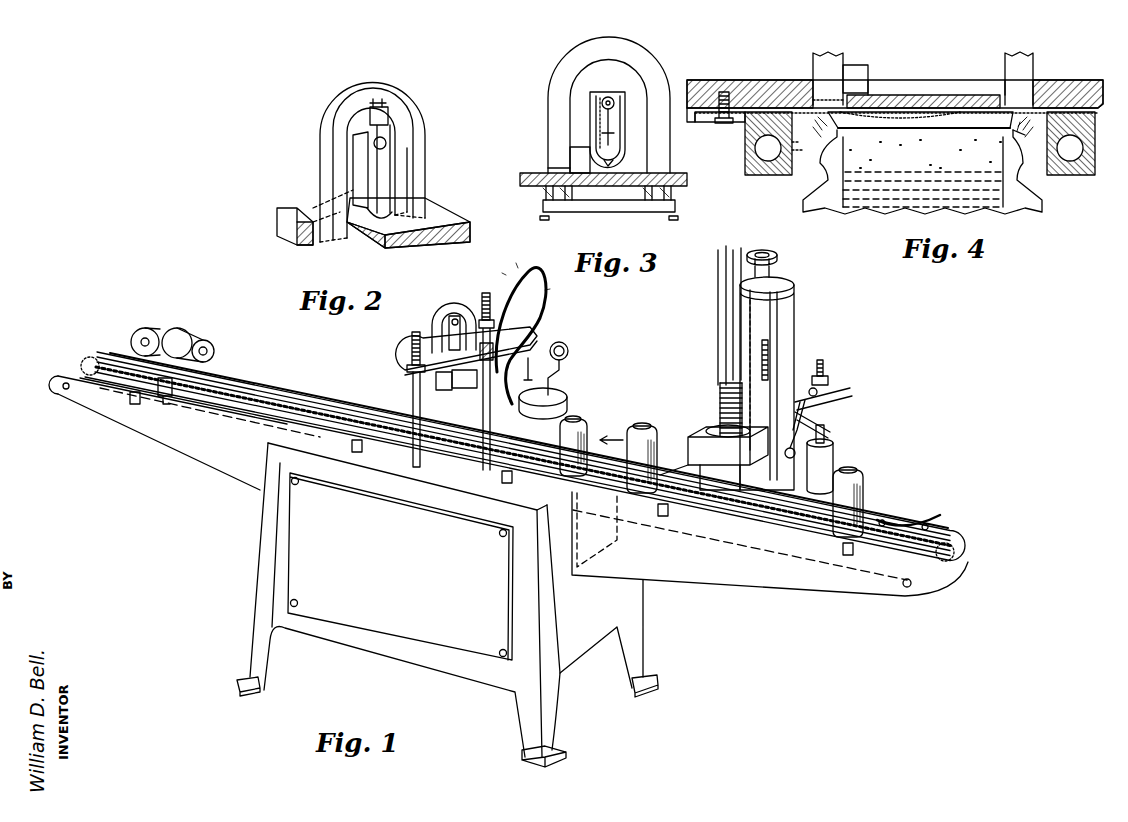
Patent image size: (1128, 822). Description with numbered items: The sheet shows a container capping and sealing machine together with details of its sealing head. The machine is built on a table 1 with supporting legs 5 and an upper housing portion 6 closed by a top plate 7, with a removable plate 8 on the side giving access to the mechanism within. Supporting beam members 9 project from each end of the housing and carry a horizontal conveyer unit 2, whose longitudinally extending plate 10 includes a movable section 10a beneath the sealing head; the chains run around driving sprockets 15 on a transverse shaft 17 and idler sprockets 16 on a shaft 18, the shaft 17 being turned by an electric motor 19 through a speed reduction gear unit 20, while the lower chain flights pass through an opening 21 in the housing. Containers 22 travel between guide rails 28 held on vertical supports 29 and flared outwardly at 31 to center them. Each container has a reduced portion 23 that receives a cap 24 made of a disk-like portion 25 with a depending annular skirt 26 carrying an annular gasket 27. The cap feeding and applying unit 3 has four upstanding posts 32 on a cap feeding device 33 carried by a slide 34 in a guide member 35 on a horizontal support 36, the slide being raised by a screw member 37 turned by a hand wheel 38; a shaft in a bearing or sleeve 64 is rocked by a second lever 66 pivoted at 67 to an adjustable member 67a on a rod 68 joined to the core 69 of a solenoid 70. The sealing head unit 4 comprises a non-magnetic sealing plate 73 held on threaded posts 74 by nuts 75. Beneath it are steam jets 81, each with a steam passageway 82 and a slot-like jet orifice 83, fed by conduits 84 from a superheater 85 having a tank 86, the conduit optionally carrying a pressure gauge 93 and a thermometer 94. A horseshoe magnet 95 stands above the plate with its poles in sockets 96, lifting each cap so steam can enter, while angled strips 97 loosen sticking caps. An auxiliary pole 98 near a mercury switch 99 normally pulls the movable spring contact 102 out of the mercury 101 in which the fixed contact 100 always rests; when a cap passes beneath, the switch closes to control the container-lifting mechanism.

In FIG. 1, the table 1 is at (258, 527).
In FIG. 1, the conveyer unit 2 is at (267, 400).
In FIG. 1, the cap feeding and applying unit 3 is at (792, 331).
In FIG. 1, the sealing head unit 4 is at (428, 336).
In FIG. 1, the supporting legs 5 is at (258, 654).
In FIG. 1, the upper housing portion 6 is at (278, 547).
In FIG. 1, the top plate 7 is at (369, 392).
In FIG. 1, the removable plate 8 is at (308, 565).
In FIG. 1, the supporting beam members 9 is at (217, 453).
In FIG. 1, the longitudinally extending plate 10 is at (133, 379).
In FIG. 1, the movable section 10a is at (453, 453).
In FIG. 1, the driving sprockets 15 is at (88, 359).
In FIG. 1, the idler sprockets 16 is at (942, 566).
In FIG. 1, the horizontal transverse shaft 17 is at (57, 386).
In FIG. 1, the horizontal transverse shaft 18 is at (908, 590).
In FIG. 1, the electric motor 19 is at (185, 331).
In FIG. 1, the speed reduction gear unit 20 is at (150, 329).
In FIG. 1, the opening 21 is at (622, 538).
In FIG. 4, the containers 22 is at (1033, 213).
In FIG. 1, the containers 22 is at (588, 433).
In FIG. 4, the reduced portion 23 is at (1027, 160).
In FIG. 3, the cap 24 is at (676, 206).
In FIG. 4, the disk-like portion 25 is at (915, 112).
In FIG. 4, the annular skirt 26 is at (817, 140).
In FIG. 4, the annular gasket 27 is at (957, 126).
In FIG. 1, the guide rails 28 is at (238, 367).
In FIG. 1, the vertical supports 29 is at (163, 397).
In FIG. 1, the flared portion 31 is at (930, 516).
In FIG. 1, the upstanding posts 32 is at (716, 321).
In FIG. 1, the cap feeding device 33 is at (706, 436).
In FIG. 1, the slide 34 is at (720, 388).
In FIG. 1, the guide member 35 is at (783, 338).
In FIG. 1, the horizontal support 36 is at (832, 465).
In FIG. 1, the screw member 37 is at (769, 352).
In FIG. 1, the hand wheel 38 is at (778, 255).
In FIG. 1, the bearing or sleeve 64 is at (818, 408).
In FIG. 1, the second lever 66 is at (818, 392).
In FIG. 1, the pivot 67 is at (810, 392).
In FIG. 1, the adjustable member 67a is at (826, 374).
In FIG. 1, the rod 68 is at (806, 423).
In FIG. 1, the core 69 is at (826, 436).
In FIG. 1, the solenoid 70 is at (836, 480).
In FIG. 2, the sealing plate 73 is at (443, 217).
In FIG. 3, the sealing plate 73 is at (526, 180).
In FIG. 4, the sealing plate 73 is at (768, 93).
In FIG. 1, the sealing plate 73 is at (496, 335).
In FIG. 1, the posts 74 is at (411, 448).
In FIG. 1, the nuts 75 is at (408, 365).
In FIG. 4, the steam jets 81 is at (746, 133).
In FIG. 1, the steam jets 81 is at (455, 382).
In FIG. 4, the steam passageway 82 is at (760, 148).
In FIG. 4, the jet orifice 83 is at (782, 167).
In FIG. 1, the conduits 84 is at (511, 402).
In FIG. 1, the superheater 85 is at (552, 393).
In FIG. 1, the tank 86 is at (574, 417).
In FIG. 1, the pressure gauge 93 is at (567, 349).
In FIG. 1, the thermometer 94 is at (530, 365).
In FIG. 2, the magnet 95 is at (331, 123).
In FIG. 3, the magnet 95 is at (583, 56).
In FIG. 4, the magnet 95 is at (829, 73).
In FIG. 1, the magnet 95 is at (445, 320).
In FIG. 2, the sockets 96 is at (422, 207).
In FIG. 3, the sockets 96 is at (551, 172).
In FIG. 4, the sockets 96 is at (812, 102).
In FIG. 3, the strips 97 is at (545, 221).
In FIG. 1, the strips 97 is at (470, 383).
In FIG. 2, the auxiliary pole 98 is at (357, 212).
In FIG. 3, the auxiliary pole 98 is at (575, 156).
In FIG. 4, the auxiliary pole 98 is at (852, 80).
In FIG. 2, the mercury switch 99 is at (388, 146).
In FIG. 3, the mercury switch 99 is at (604, 98).
In FIG. 1, the mercury switch 99 is at (460, 318).
In FIG. 2, the contact 100 is at (398, 158).
In FIG. 3, the contact 100 is at (622, 119).
In FIG. 2, the mercury 101 is at (385, 212).
In FIG. 3, the mercury 101 is at (613, 163).
In FIG. 2, the movable spring contact 102 is at (368, 167).
In FIG. 3, the movable spring contact 102 is at (592, 115).